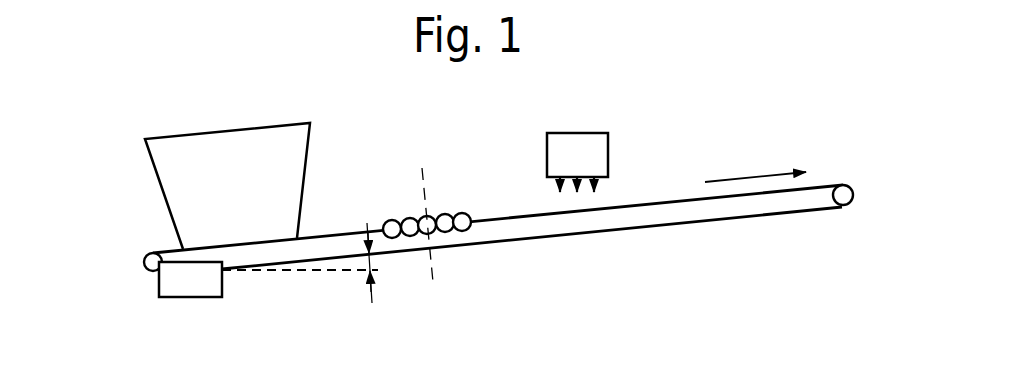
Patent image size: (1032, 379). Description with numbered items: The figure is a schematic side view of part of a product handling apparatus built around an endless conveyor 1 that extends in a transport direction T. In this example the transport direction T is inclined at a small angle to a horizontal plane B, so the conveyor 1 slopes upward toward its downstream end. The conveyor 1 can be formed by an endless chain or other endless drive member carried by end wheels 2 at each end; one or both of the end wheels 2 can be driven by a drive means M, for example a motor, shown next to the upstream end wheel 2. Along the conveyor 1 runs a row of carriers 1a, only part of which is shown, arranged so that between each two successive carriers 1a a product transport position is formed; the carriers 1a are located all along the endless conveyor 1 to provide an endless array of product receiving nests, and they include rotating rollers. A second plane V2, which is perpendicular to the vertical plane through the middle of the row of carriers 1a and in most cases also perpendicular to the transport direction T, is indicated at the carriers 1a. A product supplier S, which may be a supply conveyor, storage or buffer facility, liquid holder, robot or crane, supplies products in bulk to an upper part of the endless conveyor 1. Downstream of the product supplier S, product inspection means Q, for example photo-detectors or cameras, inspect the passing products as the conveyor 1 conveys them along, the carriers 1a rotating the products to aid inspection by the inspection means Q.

The endless conveyor 1 is at (674, 249).
The carriers 1a is at (386, 218).
The end wheels 2 is at (141, 270).
The product supplier S is at (180, 168).
The drive means M is at (190, 283).
The horizontal plane B is at (305, 270).
The second plane V2 is at (439, 221).
The product inspection means Q is at (590, 157).
The transport direction T is at (755, 162).